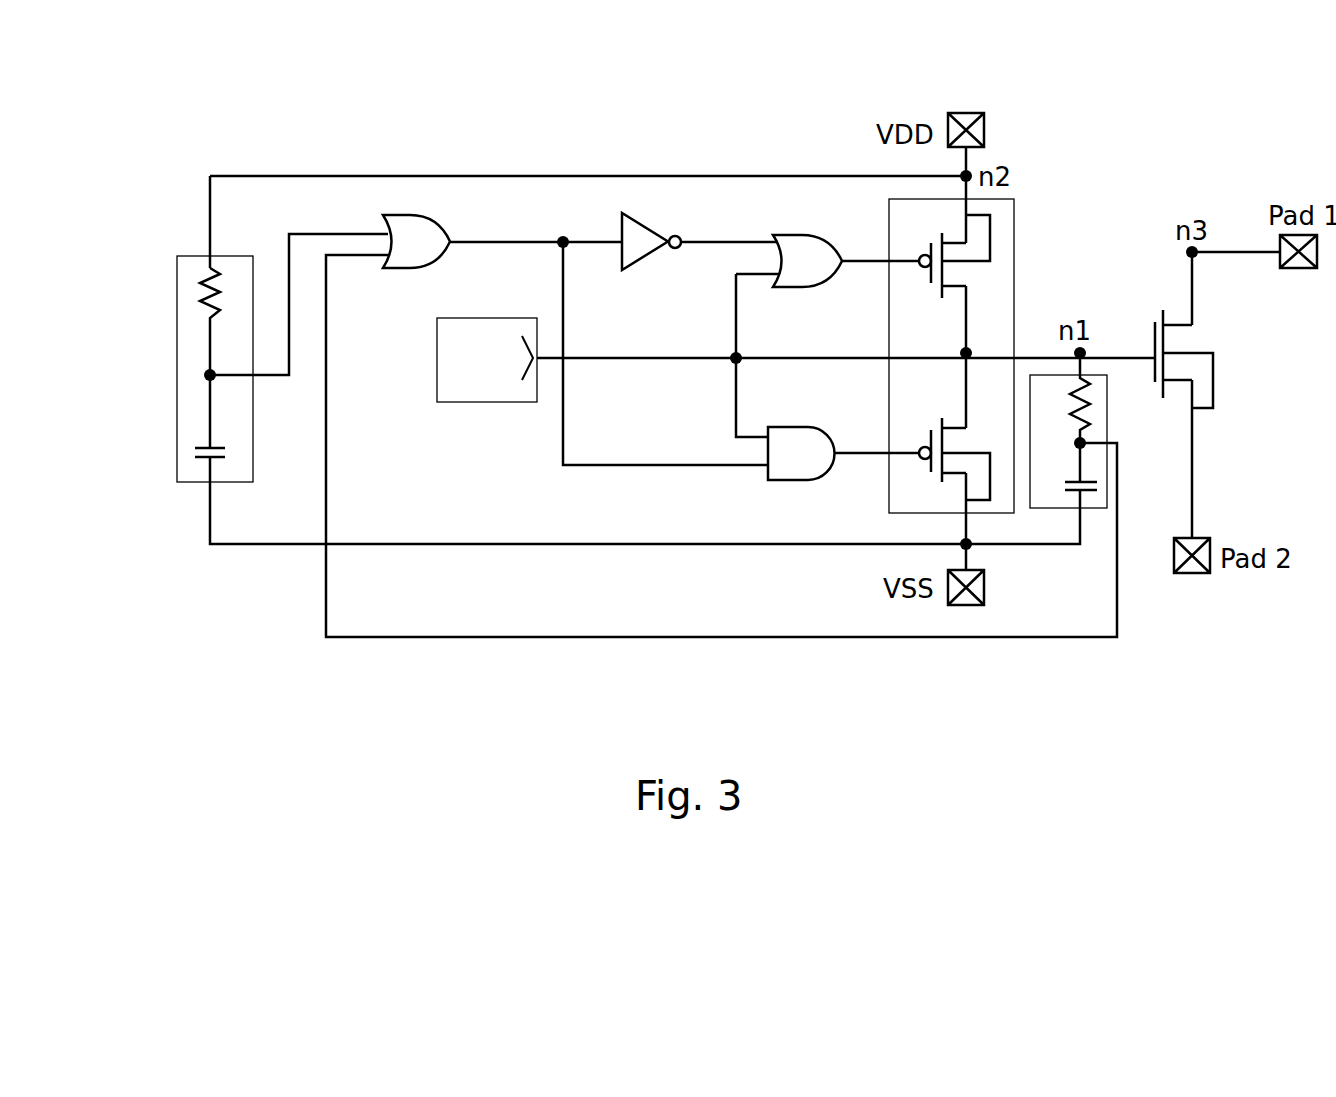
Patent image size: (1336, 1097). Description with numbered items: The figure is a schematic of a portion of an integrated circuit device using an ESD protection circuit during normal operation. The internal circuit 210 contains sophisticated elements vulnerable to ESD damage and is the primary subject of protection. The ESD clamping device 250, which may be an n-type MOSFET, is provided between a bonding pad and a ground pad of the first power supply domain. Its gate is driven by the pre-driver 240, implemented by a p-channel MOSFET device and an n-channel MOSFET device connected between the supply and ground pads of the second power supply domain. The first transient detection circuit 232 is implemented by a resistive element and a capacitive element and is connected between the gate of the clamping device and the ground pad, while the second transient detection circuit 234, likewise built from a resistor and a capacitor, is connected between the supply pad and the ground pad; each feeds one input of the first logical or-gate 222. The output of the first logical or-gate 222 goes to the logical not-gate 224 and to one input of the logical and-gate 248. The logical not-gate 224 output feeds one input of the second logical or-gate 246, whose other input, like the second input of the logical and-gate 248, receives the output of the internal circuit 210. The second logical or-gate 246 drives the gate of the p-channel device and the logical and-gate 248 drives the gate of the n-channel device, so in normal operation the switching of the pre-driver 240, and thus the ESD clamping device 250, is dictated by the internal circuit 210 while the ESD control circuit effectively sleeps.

The internal circuit 210 is at (487, 360).
The first logical or-gate 222 is at (439, 236).
The logical not-gate 224 is at (663, 236).
The second logical or-gate 246 is at (819, 246).
The logical and-gate 248 is at (819, 439).
The pre-driver 240 is at (1015, 220).
The first transient detection circuit 232 is at (1100, 373).
The second transient detection circuit 234 is at (177, 382).
The ESD clamping device 250 is at (1213, 359).